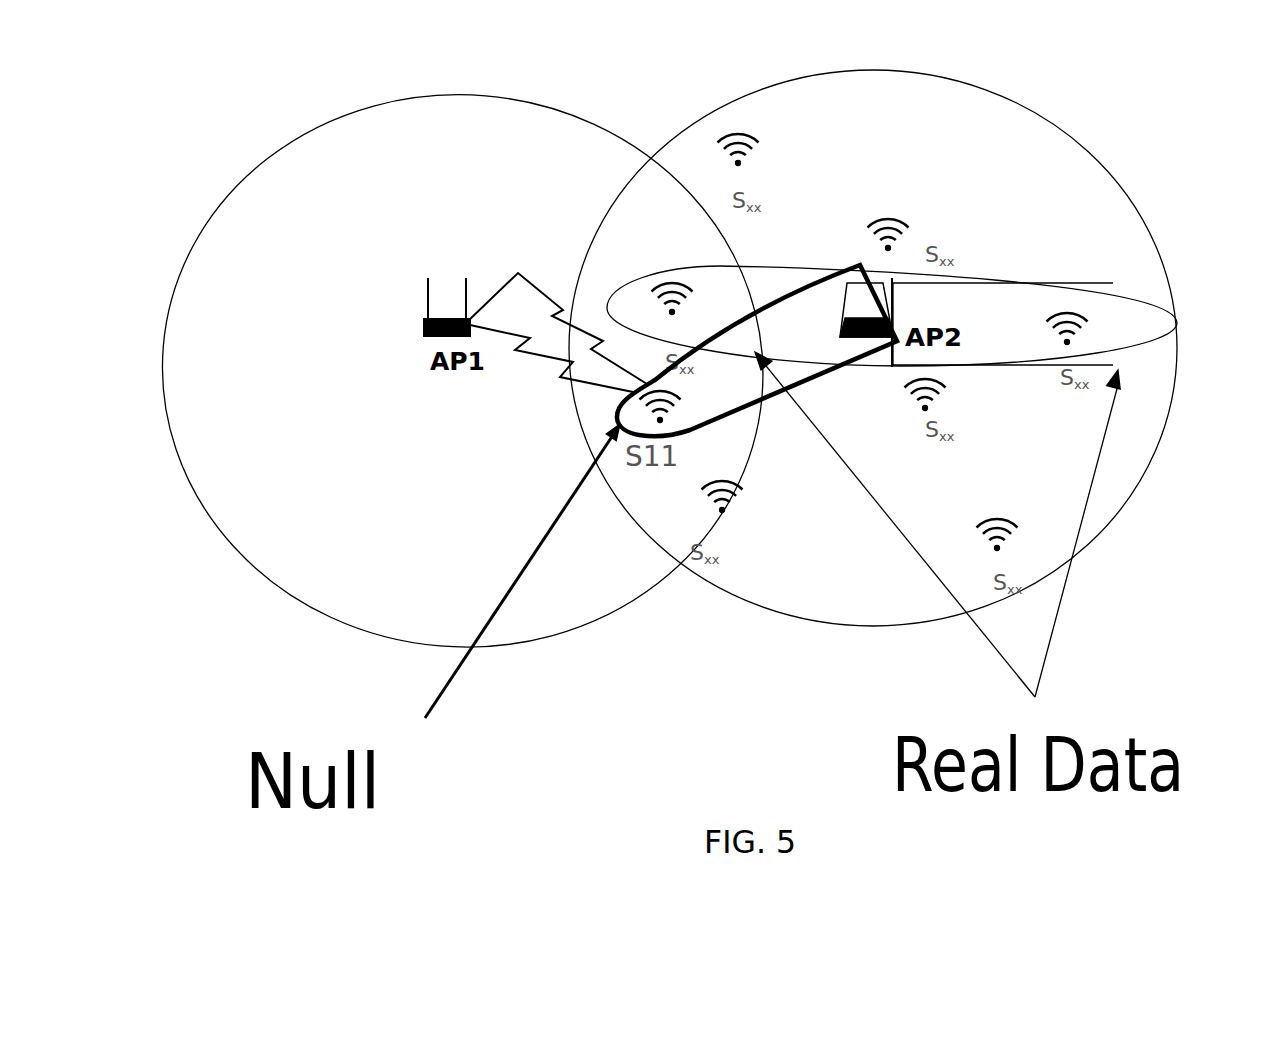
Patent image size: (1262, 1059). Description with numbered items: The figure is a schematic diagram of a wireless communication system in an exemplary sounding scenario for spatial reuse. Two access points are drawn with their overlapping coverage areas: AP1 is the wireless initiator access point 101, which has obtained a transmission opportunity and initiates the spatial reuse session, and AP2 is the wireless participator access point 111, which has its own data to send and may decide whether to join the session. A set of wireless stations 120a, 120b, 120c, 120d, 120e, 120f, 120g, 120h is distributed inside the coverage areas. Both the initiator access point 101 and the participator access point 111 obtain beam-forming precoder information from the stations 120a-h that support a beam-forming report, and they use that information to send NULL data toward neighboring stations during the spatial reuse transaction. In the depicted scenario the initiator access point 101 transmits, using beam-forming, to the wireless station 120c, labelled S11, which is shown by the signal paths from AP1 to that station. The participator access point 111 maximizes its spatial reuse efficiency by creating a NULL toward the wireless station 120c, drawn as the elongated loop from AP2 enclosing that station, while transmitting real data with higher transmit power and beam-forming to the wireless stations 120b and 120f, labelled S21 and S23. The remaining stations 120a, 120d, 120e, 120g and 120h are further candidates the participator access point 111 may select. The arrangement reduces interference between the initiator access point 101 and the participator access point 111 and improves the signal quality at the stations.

The wireless initiator access point 101 is at (428, 320).
The wireless participator access point 111 is at (848, 258).
The wireless station 120a is at (760, 162).
The wireless station 120b is at (651, 309).
The wireless station 120c is at (683, 427).
The wireless station 120d is at (740, 513).
The wireless station 120e is at (1020, 552).
The wireless station 120f is at (1090, 343).
The wireless station 120g is at (946, 413).
The wireless station 120h is at (908, 243).